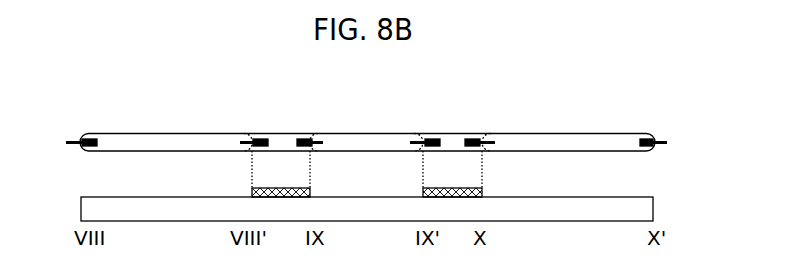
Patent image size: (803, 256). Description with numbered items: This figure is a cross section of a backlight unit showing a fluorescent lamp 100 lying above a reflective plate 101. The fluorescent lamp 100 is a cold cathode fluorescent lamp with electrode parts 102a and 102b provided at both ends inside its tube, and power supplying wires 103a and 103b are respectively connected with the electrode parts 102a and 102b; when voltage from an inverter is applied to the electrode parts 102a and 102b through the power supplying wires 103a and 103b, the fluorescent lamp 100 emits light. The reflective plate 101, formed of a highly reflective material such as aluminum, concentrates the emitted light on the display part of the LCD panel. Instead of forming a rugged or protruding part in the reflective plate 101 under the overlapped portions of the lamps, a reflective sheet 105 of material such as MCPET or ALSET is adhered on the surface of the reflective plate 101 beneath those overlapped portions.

The fluorescent lamp 100 is at (187, 137).
The reflective plate 101 is at (653, 210).
The electrode part 102a is at (84, 138).
The electrode part 102b is at (300, 138).
The power supplying wire 103a is at (70, 141).
The power supplying wire 103b is at (322, 139).
The reflective sheet 105 is at (298, 188).